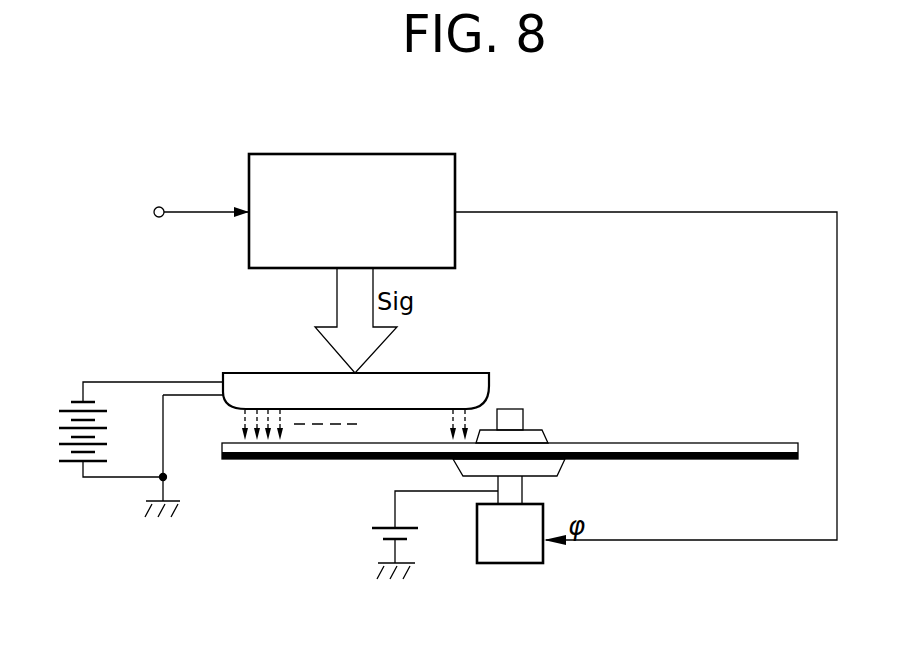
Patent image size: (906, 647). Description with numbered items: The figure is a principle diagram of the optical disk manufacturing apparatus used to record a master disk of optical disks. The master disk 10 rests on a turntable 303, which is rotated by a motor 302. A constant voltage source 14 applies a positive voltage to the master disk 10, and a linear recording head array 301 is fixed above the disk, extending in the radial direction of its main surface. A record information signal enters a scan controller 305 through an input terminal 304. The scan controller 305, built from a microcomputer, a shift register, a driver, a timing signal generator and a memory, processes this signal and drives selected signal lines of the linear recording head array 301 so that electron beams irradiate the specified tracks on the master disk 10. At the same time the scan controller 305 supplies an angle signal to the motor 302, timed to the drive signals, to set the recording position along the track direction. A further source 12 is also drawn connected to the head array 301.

The scan controller 305 is at (412, 153).
The input terminal 304 is at (159, 206).
The linear recording head array 301 is at (467, 373).
The DC power source 12 is at (52, 415).
The master disk 10 is at (738, 443).
The turntable 303 is at (566, 470).
The motor 302 is at (520, 565).
The constant voltage source 14 is at (372, 540).